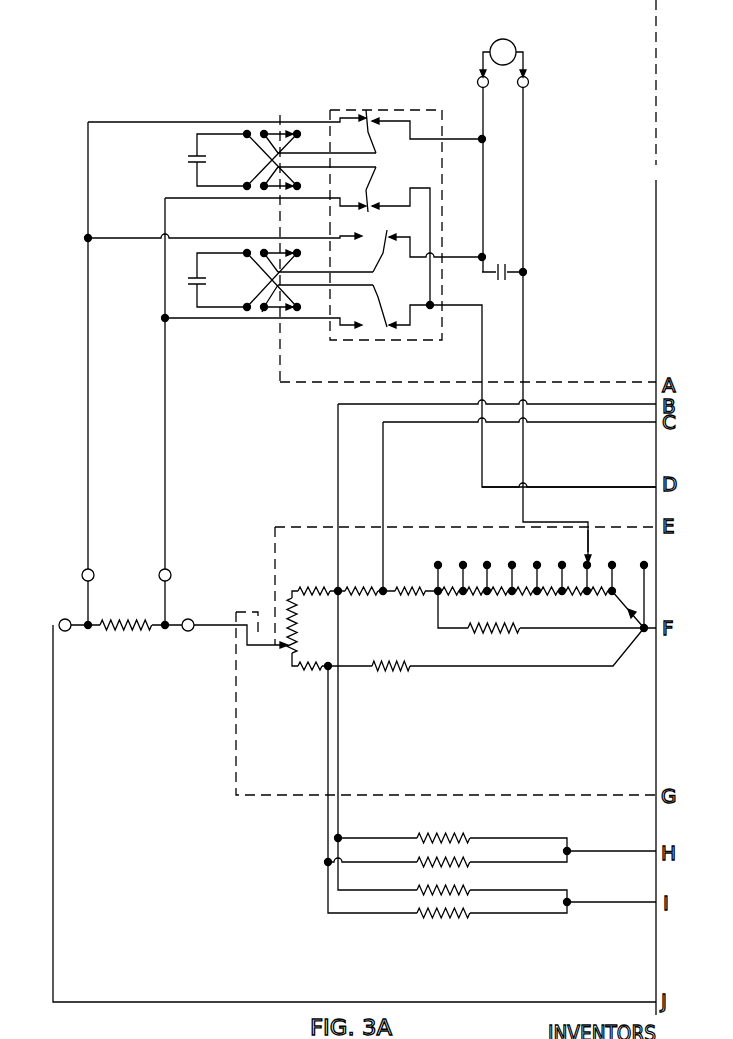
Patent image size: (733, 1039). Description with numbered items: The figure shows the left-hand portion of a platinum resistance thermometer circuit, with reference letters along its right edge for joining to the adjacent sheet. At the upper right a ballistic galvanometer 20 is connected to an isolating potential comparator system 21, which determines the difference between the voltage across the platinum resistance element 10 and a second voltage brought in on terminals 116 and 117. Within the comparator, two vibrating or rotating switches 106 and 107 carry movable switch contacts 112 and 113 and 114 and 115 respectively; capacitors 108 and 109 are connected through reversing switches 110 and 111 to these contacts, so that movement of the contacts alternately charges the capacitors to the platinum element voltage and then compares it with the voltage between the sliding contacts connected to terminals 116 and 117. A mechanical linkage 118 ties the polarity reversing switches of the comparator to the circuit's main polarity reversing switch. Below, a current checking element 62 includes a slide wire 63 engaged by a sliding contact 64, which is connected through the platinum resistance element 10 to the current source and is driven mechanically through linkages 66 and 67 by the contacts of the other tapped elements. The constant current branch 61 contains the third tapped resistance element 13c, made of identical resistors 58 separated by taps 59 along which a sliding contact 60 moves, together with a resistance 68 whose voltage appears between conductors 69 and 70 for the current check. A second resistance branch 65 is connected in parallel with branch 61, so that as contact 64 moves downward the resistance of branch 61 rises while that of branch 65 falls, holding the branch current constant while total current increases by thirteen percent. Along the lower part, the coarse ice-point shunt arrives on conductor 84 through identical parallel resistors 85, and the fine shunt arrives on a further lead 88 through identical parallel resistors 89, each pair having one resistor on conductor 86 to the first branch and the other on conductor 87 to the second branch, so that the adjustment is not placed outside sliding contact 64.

The platinum resistance element 10 is at (119, 629).
The third tapped resistance element 13c is at (447, 539).
The ballistic galvanometer 20 is at (512, 43).
The isolating potential comparator system 21 is at (276, 110).
The identical resistors 58 is at (452, 594).
The taps 59 is at (464, 574).
The sliding contact 60 is at (594, 540).
The constant current branch 61 is at (380, 601).
The current checking element 62 is at (291, 552).
The slide wire 63 is at (295, 624).
The sliding contact 64 is at (273, 646).
The second resistance branch 65 is at (442, 675).
The linkage 66 is at (235, 725).
The linkage 67 is at (274, 586).
The resistance 68 is at (360, 586).
The conductor 69 is at (338, 416).
The conductor 70 is at (383, 492).
The conductor 84 is at (601, 853).
The identical parallel resistors 85 is at (464, 860).
The conductor 86 is at (339, 788).
The conductor 87 is at (326, 764).
The conductor 88 is at (602, 904).
The identical parallel resistors 89 is at (474, 893).
The vibrating or rotating switch 106 is at (375, 114).
The vibrating or rotating switch 107 is at (400, 338).
The capacitor 108 is at (192, 175).
The capacitor 109 is at (169, 296).
The reversing switch 110 is at (263, 131).
The reversing switch 111 is at (265, 310).
The movable switch contact 112 is at (369, 134).
The movable switch contact 113 is at (369, 182).
The movable switch contact 114 is at (380, 258).
The movable switch contact 115 is at (376, 290).
The terminal 116 is at (482, 108).
The terminal 117 is at (524, 128).
The mechanical linkage 118 is at (278, 375).